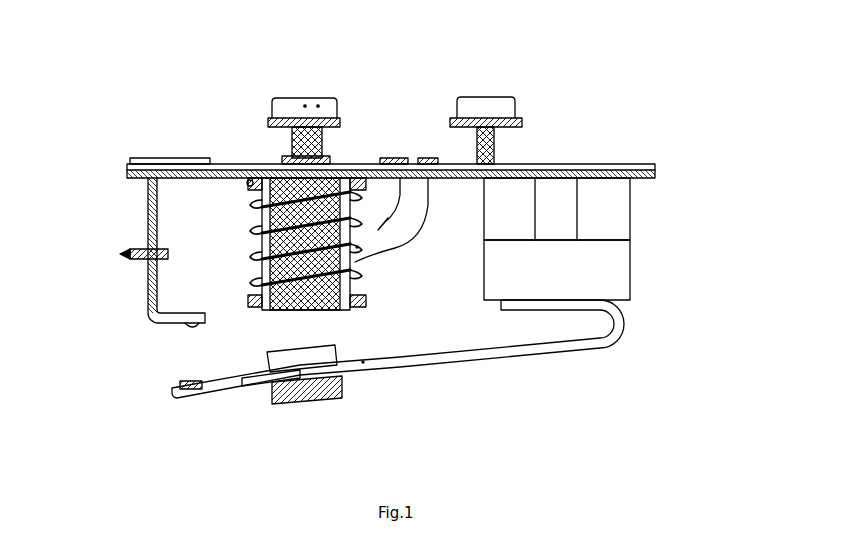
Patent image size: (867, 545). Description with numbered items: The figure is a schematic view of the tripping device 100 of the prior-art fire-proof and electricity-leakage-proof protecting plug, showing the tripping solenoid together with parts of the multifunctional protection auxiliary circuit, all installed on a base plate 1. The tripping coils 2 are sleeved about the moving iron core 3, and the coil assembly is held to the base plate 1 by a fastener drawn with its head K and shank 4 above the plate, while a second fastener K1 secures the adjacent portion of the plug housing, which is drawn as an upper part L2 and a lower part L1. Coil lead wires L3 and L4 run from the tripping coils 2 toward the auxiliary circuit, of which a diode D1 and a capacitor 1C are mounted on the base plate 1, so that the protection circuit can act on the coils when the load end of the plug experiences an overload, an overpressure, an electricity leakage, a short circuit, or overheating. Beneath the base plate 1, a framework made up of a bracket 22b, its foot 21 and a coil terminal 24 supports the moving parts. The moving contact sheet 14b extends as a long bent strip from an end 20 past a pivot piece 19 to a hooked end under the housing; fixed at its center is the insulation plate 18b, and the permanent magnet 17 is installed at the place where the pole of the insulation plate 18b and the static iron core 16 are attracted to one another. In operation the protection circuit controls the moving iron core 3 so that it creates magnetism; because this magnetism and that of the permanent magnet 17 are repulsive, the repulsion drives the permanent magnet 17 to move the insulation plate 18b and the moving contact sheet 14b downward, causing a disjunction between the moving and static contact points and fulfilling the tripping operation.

The base plate 1 is at (150, 170).
The electromagnetic coil 2 is at (273, 178).
The fixing bolt 3 is at (272, 120).
The bolt head K is at (305, 105).
The bolt head top 4 is at (318, 105).
The lead wire L3 is at (350, 163).
The diode D1 is at (394, 160).
The capacitor 1C is at (428, 160).
The screw K1 is at (490, 105).
The housing upper part L2 is at (617, 225).
The housing lower part L1 is at (617, 275).
The lever 14b is at (533, 350).
The lever end 20 is at (172, 390).
The plate 19 is at (262, 377).
The block 18b is at (283, 395).
The wedge 17 is at (313, 388).
The armature 16 is at (363, 362).
The lead wire L4 is at (357, 247).
The bracket 22b is at (148, 293).
The bracket foot 21 is at (192, 325).
The coil terminal 24 is at (248, 183).
The electromagnetic device 100 is at (668, 358).